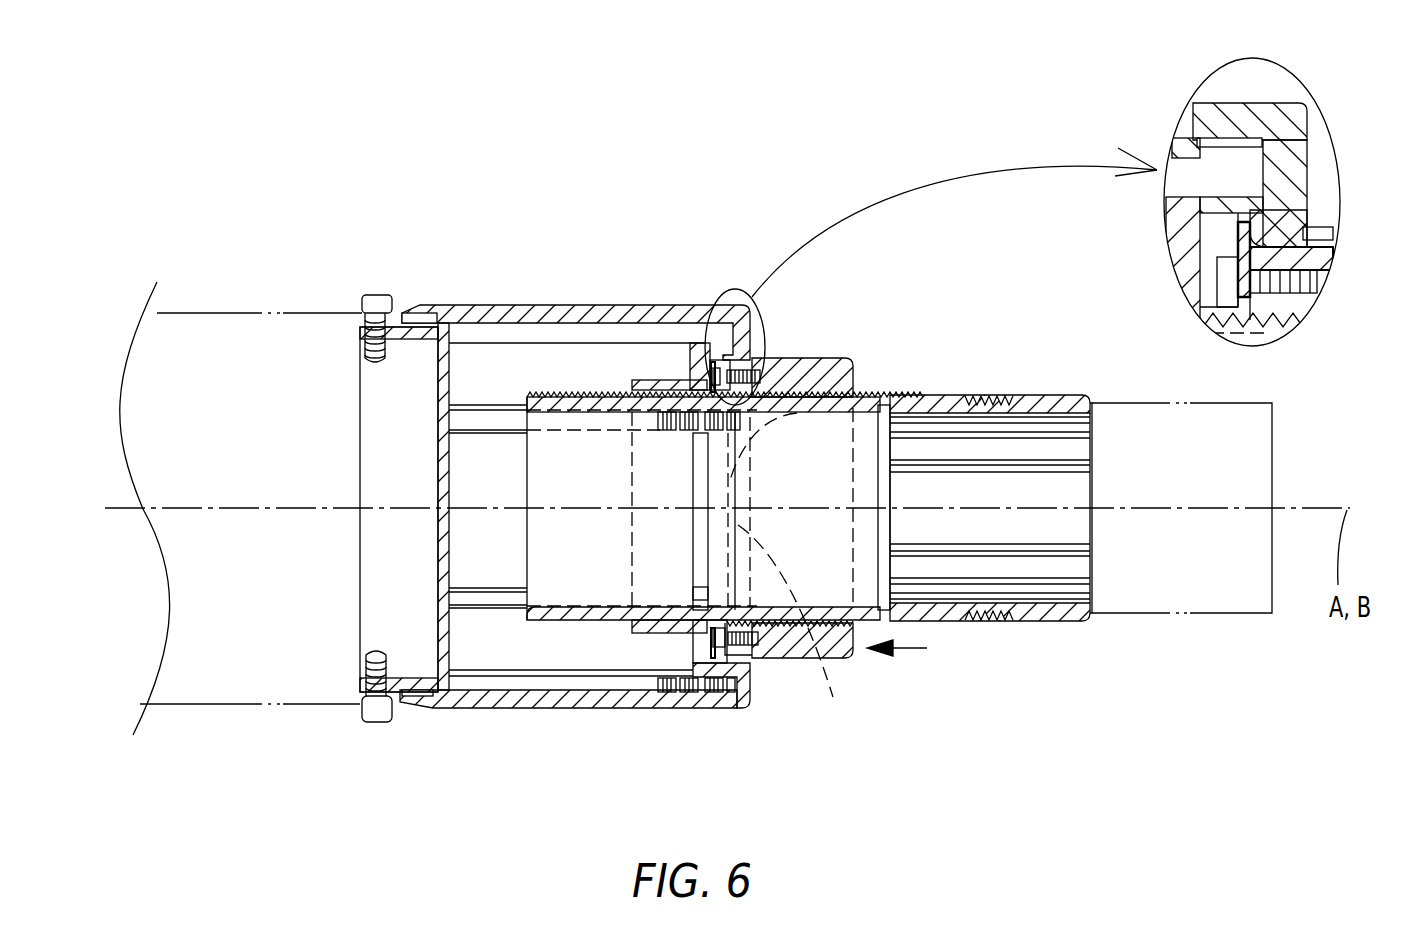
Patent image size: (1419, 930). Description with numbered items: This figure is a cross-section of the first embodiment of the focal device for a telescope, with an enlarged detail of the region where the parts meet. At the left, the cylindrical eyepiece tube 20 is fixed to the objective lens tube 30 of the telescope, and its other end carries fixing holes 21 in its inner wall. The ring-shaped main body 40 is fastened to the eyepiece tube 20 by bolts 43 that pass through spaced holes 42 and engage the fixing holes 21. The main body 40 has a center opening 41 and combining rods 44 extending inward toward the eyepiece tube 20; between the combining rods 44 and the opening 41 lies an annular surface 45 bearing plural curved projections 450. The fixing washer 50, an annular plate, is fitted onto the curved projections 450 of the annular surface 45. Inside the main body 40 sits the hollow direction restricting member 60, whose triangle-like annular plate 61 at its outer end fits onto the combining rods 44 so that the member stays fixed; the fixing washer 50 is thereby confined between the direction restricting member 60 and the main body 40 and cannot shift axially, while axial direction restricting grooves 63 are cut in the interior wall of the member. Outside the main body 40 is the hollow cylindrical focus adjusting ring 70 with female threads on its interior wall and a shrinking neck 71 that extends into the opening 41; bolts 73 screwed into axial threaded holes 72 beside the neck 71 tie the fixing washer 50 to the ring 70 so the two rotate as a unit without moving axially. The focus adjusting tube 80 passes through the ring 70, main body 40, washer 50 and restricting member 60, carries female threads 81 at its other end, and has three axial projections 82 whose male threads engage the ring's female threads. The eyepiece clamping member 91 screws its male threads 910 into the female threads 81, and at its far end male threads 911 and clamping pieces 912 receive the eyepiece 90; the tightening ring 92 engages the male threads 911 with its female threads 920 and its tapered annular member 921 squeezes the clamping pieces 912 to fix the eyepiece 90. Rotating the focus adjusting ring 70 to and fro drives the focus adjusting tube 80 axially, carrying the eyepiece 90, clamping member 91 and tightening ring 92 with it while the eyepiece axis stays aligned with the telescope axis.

The eyepiece tube 20 is at (522, 702).
The fixing holes 21 is at (620, 685).
The objective lens tube 30 is at (255, 682).
The main body 40 is at (703, 700).
The center opening 41 is at (813, 640).
The holes 42 is at (715, 685).
The bolts 43 is at (729, 620).
The combining rods 44 is at (700, 360).
The annular surface 45 is at (1324, 188).
The curved projections 450 is at (1283, 227).
The fixing washer 50 is at (712, 355).
The direction restricting member 60 is at (663, 627).
The triangle-like annular plate 61 is at (693, 360).
The direction restricting grooves 63 is at (623, 285).
The focus adjusting ring 70 is at (847, 657).
The shrinking neck 71 is at (748, 693).
The threaded holes 72 is at (1310, 318).
The bolts 73 is at (1277, 280).
The focus adjusting tube 80 is at (772, 613).
The female threads 81 is at (910, 448).
The axial projections 82 is at (647, 382).
The eyepiece 90 is at (1203, 592).
The eyepiece clamping member 91 is at (948, 623).
The tightening ring 92 is at (1048, 623).
The male threads 910 is at (910, 397).
The male threads 911 is at (992, 397).
The clamping pieces 912 is at (987, 455).
The female threads 920 is at (973, 428).
The tapered annular member 921 is at (1082, 397).